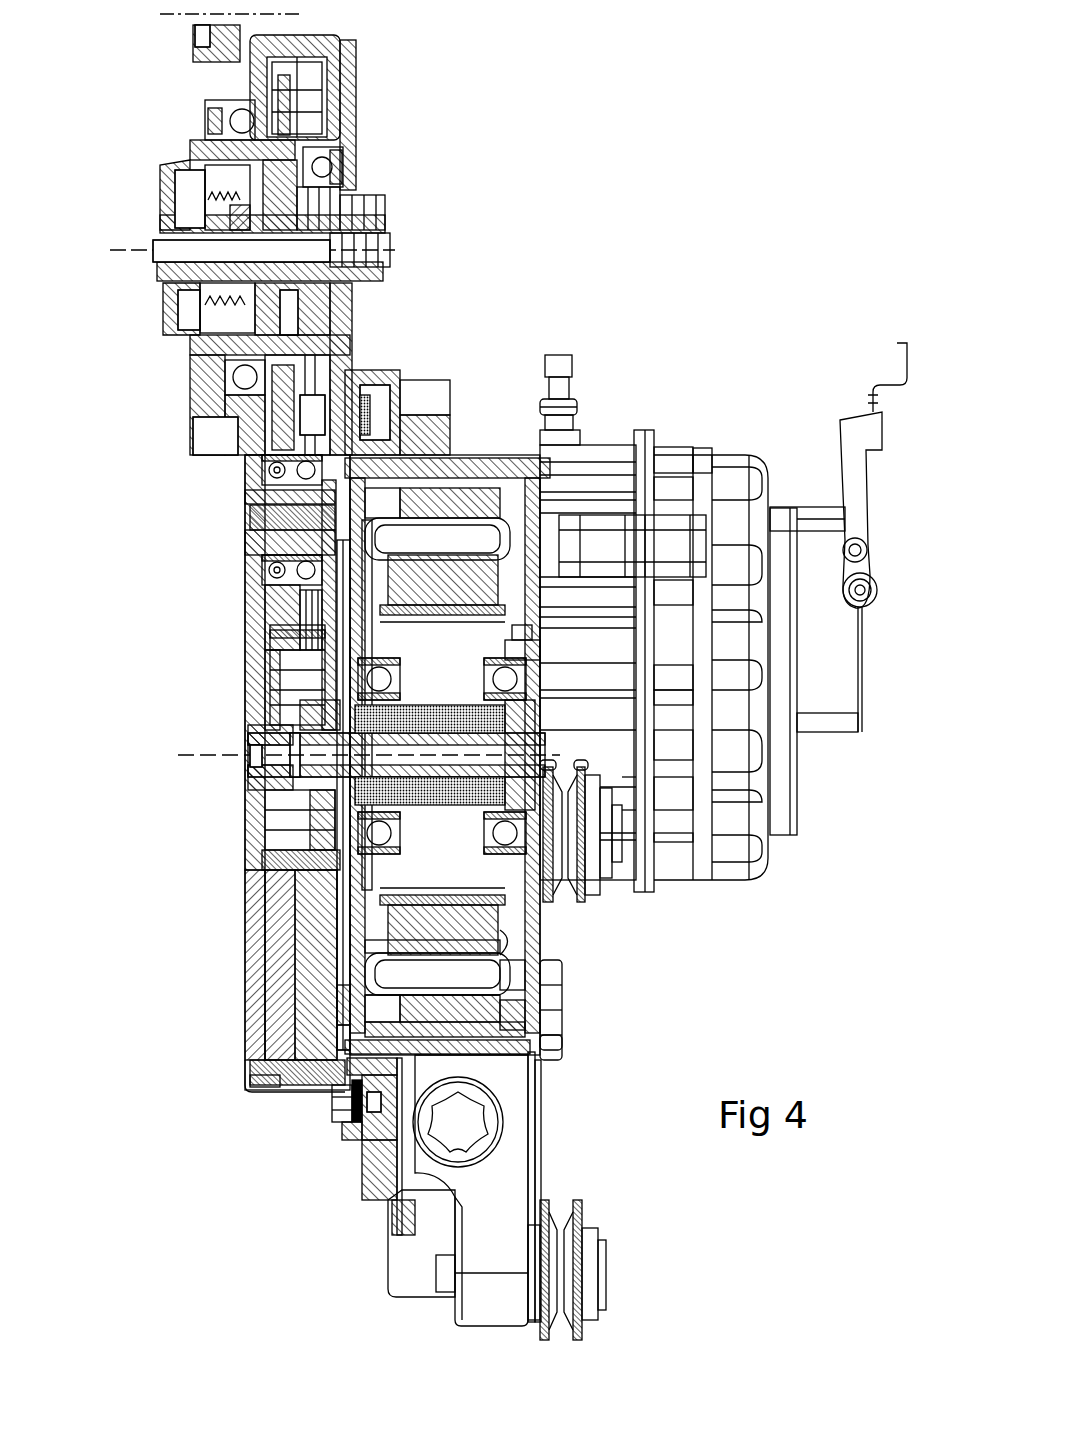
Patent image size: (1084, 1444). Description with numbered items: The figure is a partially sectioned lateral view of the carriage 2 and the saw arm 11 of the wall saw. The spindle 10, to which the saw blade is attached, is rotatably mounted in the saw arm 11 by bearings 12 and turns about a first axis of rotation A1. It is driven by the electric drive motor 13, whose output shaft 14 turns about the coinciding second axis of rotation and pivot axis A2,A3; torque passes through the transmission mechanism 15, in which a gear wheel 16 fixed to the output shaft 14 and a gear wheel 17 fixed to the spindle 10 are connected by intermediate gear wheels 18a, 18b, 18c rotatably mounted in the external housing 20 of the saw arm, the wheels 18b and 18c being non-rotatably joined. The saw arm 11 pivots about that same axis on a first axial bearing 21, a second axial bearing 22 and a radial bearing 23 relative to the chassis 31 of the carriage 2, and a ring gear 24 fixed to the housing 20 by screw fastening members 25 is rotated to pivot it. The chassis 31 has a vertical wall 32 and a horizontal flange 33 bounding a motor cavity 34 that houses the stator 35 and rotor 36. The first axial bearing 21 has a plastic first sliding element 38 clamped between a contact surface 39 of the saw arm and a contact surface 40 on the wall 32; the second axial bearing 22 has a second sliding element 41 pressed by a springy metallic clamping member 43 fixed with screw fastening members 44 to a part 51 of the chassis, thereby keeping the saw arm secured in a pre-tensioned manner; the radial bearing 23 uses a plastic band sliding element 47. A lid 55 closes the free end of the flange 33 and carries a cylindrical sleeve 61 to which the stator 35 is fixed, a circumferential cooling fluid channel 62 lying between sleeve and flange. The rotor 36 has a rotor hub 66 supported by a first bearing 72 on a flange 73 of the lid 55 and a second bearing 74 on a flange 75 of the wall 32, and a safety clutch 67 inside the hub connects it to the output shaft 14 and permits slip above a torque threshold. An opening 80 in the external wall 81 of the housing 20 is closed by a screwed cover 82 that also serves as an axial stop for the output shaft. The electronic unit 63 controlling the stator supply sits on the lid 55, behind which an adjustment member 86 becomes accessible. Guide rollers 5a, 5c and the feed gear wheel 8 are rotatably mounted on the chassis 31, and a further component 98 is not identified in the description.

The carriage 2 is at (543, 1142).
The guide roller 5a is at (575, 882).
The guide roller 5c is at (575, 1234).
The feed gear wheel 8 is at (555, 1044).
The spindle 10 is at (150, 185).
The saw arm 11 is at (382, 164).
The bearings 12 is at (222, 112).
The electric drive motor 13 is at (510, 986).
The output shaft 14 is at (330, 792).
The transmission mechanism 15 is at (325, 370).
The gear wheel 16 is at (290, 733).
The gear wheel 17 is at (284, 56).
The intermediate gear wheel 18a is at (278, 690).
The intermediate gear wheel 18b is at (305, 640).
The intermediate gear wheel 18c is at (285, 455).
The external housing 20 is at (255, 548).
The first axial bearing 21 is at (330, 930).
The second axial bearing 22 is at (398, 398).
The radial bearing 23 is at (350, 1045).
The ring gear 24 is at (395, 430).
The fastening members 25 is at (278, 1080).
The chassis 31 is at (372, 1190).
The vertical wall 32 is at (345, 1000).
The flange 33 is at (485, 1054).
The motor cavity 34 is at (512, 1012).
The stator 35 is at (480, 980).
The rotor 36 is at (490, 942).
The first sliding element 38 is at (337, 968).
The contact surface 39 is at (356, 1040).
The contact surface 40 is at (345, 1002).
The second sliding element 41 is at (360, 1107).
The clamping member 43 is at (355, 1100).
The fastening members 44 is at (350, 1135).
The sliding element 47 is at (348, 1092).
The part of the chassis 51 is at (376, 405).
The lid 55 is at (545, 550).
The cylindrical sleeve 61 is at (500, 455).
The cooling fluid channel 62 is at (470, 470).
The electronic unit 63 is at (736, 438).
The rotor hub 66 is at (415, 703).
The safety clutch 67 is at (420, 802).
The first bearing 72 is at (532, 680).
The flange 73 is at (515, 665).
The second bearing 74 is at (378, 660).
The flange 75 is at (380, 858).
The opening 80 is at (242, 772).
The external wall 81 is at (245, 882).
The cover 82 is at (250, 735).
The adjustment member 86 is at (538, 735).
The washer 98 is at (335, 815).
The first axis of rotation A1 is at (120, 244).
The second axis of rotation and pivot axis A2,A3 is at (180, 752).